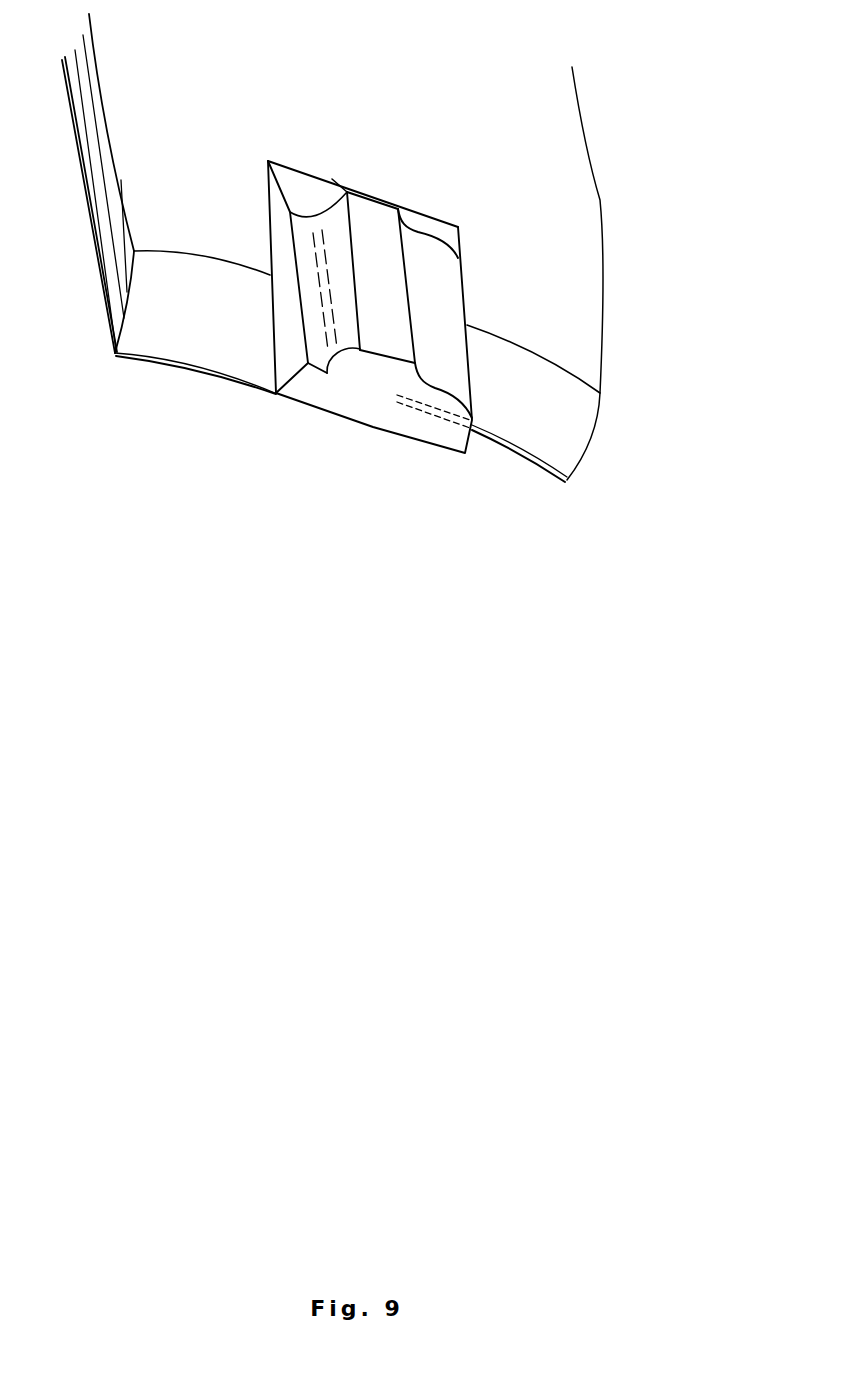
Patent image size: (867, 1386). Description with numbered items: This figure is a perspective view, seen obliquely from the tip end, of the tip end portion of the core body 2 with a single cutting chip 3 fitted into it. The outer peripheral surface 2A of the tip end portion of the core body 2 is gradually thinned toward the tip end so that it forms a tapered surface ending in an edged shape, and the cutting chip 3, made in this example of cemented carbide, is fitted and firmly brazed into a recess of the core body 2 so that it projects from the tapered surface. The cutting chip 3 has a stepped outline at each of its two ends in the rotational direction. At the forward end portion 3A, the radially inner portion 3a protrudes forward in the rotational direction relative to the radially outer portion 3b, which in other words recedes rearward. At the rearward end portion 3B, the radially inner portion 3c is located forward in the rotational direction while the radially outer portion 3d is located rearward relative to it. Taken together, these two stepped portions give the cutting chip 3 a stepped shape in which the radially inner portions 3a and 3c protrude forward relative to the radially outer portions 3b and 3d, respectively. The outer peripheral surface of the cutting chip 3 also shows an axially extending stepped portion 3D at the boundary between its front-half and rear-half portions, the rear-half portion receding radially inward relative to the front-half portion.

The core body 2 is at (567, 132).
The outer peripheral surface of the tip end portion of the core body 2A is at (162, 333).
The cutting chip 3 is at (379, 337).
The forward end portion 3A is at (293, 362).
The radially inner portion of the forward end portion 3a is at (300, 370).
The radially outer portion of the forward end portion 3b is at (325, 373).
The rearward end portion 3B is at (439, 404).
The radially inner portion of the rearward end portion 3c is at (378, 430).
The radially outer portion of the rearward end portion 3d is at (465, 437).
The recessed portion 3D is at (440, 288).